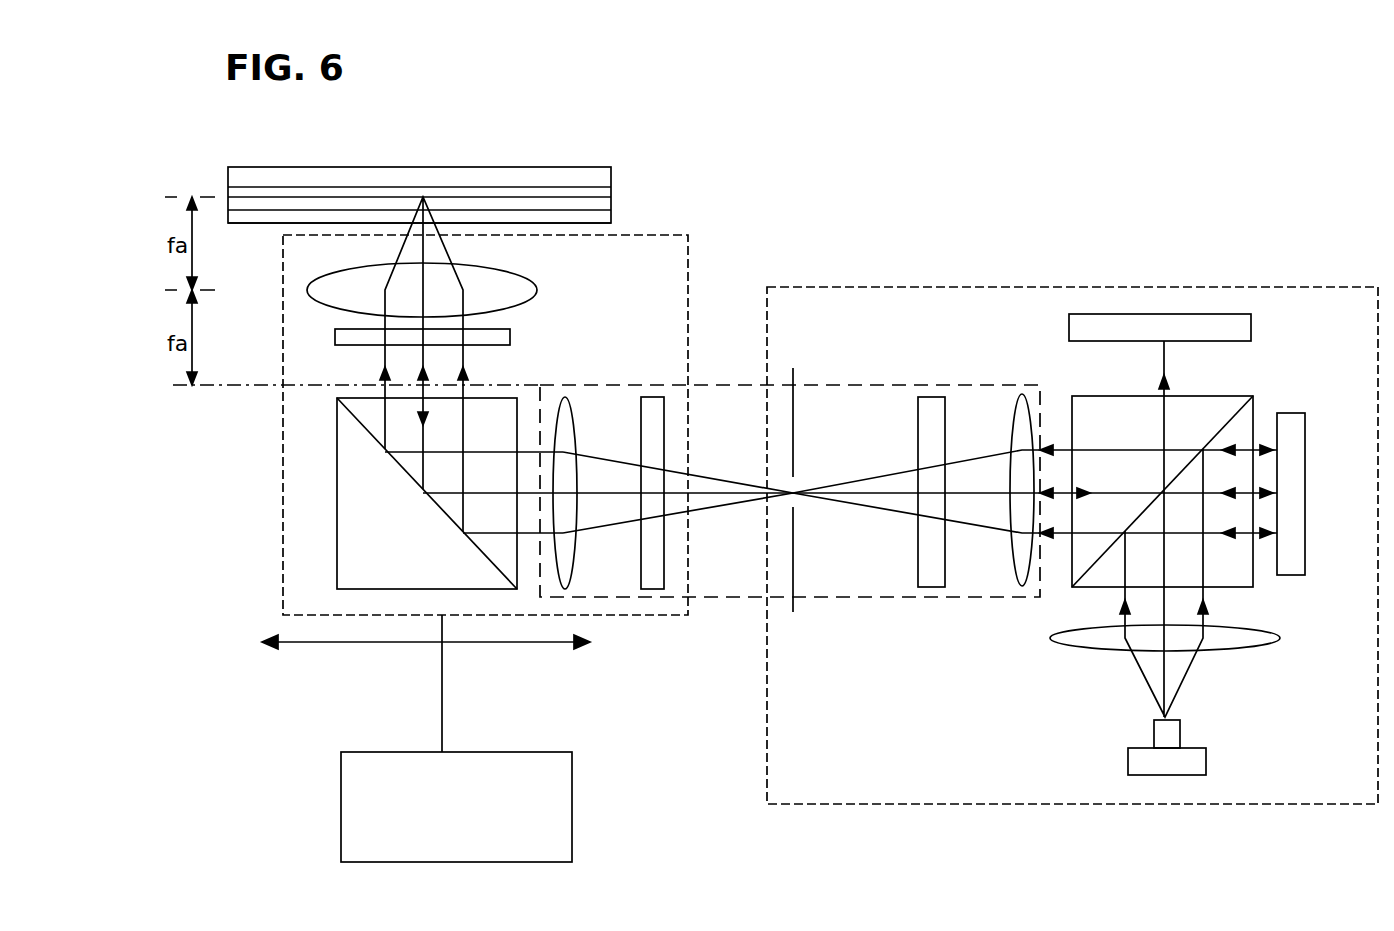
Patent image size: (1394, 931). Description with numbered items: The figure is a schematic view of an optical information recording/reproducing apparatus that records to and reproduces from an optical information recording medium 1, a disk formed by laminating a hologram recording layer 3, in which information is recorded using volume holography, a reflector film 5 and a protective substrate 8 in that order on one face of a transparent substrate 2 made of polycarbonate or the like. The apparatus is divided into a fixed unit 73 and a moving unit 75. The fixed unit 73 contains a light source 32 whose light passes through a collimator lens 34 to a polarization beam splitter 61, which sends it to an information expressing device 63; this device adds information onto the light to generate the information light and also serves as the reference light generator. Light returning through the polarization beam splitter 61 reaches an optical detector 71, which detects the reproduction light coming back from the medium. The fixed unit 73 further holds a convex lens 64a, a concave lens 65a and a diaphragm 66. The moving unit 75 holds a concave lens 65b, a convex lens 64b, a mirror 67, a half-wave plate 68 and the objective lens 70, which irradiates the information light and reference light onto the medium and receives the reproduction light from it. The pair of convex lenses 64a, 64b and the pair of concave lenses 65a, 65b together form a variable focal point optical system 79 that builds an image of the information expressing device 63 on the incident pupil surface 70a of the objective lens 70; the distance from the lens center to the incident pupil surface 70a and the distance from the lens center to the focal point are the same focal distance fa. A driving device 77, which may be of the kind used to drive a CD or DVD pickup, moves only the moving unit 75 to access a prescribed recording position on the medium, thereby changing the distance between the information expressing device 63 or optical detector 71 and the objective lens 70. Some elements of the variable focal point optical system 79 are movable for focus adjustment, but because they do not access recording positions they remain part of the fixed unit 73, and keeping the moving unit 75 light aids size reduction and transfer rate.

The optical information recording medium 1 is at (538, 164).
The substrate (protective layer) 8 is at (611, 171).
The reflector film 5 is at (611, 183).
The hologram recording layer 3 is at (611, 200).
The transparent substrate 2 is at (611, 214).
The objective lens 70 is at (307, 290).
The half-wave plate 68 is at (335, 337).
The incident pupil surface 70a is at (240, 388).
The mirror 67 is at (337, 428).
The moving unit 75 is at (688, 273).
The variable focal point optical system 79 is at (700, 597).
The convex lens 64b is at (567, 398).
The concave lens 65b is at (650, 397).
The diaphragm 66 is at (793, 368).
The concave lens 65a is at (930, 397).
The convex lens 64a is at (1017, 398).
The fixed unit 73 is at (1248, 287).
The optical detector 71 is at (1251, 322).
The polarization beam splitter 61 is at (1253, 396).
The information expressing device 63 is at (1305, 430).
The collimator lens 34 is at (1280, 638).
The light source 32 is at (1206, 760).
The driving device 77 is at (341, 798).